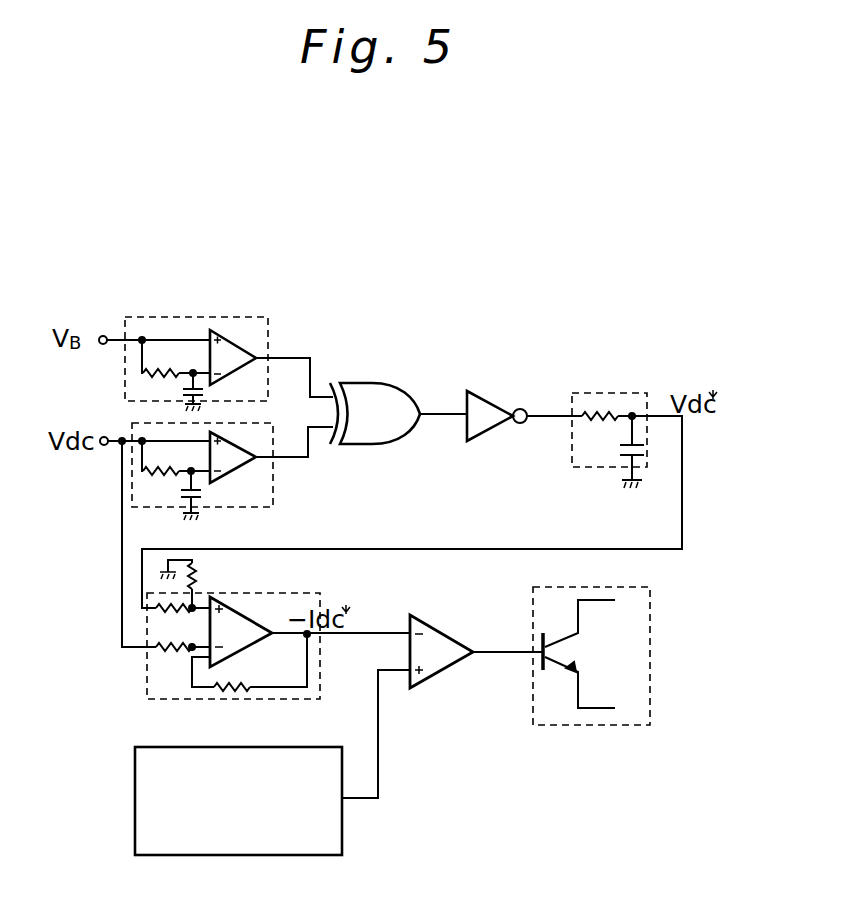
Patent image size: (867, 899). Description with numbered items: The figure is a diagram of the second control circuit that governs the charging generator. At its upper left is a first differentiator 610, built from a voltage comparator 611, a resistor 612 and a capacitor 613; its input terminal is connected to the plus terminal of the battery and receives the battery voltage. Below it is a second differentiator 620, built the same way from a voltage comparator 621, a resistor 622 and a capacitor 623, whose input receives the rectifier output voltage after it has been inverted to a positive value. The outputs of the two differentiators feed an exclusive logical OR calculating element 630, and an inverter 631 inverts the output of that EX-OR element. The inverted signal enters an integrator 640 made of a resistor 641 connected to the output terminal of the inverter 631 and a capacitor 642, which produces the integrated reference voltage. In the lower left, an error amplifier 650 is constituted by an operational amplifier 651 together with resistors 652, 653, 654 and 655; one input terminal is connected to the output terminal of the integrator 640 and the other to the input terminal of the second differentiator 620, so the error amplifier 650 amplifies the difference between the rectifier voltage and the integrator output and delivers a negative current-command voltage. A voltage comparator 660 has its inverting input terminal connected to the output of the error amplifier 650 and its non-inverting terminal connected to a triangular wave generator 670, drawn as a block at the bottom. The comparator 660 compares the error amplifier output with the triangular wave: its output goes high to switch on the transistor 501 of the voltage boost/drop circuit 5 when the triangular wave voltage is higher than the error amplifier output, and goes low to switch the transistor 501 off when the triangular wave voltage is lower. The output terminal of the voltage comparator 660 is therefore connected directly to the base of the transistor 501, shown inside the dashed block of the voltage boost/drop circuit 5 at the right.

The voltage boost/drop circuit 5 is at (651, 622).
The transistor 501 is at (576, 655).
The first differentiator 610 is at (268, 316).
The voltage comparator 611 is at (230, 338).
The resistor 612 is at (165, 370).
The capacitor 613 is at (183, 392).
The second differentiator 620 is at (131, 470).
The voltage comparator 621 is at (248, 462).
The resistor 622 is at (166, 476).
The capacitor 623 is at (206, 497).
The exclusive logical OR calculating element 630 is at (366, 382).
The inverter 631 is at (469, 391).
The integrator 640 is at (625, 392).
The resistor 641 is at (590, 408).
The capacitor 642 is at (646, 447).
The error amplifier 650 is at (160, 700).
The operational amplifier 651 is at (195, 650).
The resistor 652 is at (166, 614).
The resistor 653 is at (168, 652).
The resistor 654 is at (230, 690).
The resistor 655 is at (190, 582).
The voltage comparator 660 is at (437, 676).
The triangular wave generator 670 is at (250, 856).